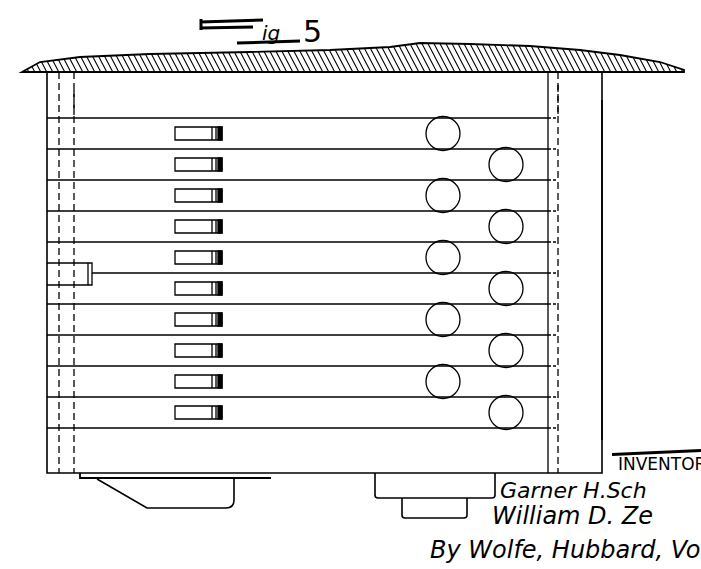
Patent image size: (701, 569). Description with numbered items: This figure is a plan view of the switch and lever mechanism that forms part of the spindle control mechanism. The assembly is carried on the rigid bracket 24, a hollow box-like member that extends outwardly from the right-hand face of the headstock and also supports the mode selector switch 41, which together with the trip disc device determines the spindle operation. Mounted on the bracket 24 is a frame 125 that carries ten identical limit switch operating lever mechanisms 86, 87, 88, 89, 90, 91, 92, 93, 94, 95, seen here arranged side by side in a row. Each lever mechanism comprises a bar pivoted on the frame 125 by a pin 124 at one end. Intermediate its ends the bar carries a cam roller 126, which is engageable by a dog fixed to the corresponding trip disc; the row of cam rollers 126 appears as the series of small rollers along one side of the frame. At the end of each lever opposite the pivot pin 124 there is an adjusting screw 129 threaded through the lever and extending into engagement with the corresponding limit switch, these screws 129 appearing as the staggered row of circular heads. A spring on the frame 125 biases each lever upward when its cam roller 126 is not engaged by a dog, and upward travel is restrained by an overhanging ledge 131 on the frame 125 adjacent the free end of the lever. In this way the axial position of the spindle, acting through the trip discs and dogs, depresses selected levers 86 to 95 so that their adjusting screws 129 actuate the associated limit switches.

The bracket 24 is at (643, 72).
The mode selector switch 41 is at (205, 506).
The limit switch operating lever mechanism 86 is at (313, 131).
The limit switch operating lever mechanism 87 is at (329, 161).
The limit switch operating lever mechanism 88 is at (340, 190).
The limit switch operating lever mechanism 89 is at (349, 221).
The limit switch operating lever mechanism 90 is at (357, 253).
The limit switch operating lever mechanism 91 is at (361, 284).
The limit switch operating lever mechanism 92 is at (288, 316).
The limit switch operating lever mechanism 93 is at (309, 349).
The limit switch operating lever mechanism 94 is at (337, 379).
The limit switch operating lever mechanism 95 is at (357, 410).
The pin 124 is at (76, 104).
The frame 125 is at (598, 227).
The cam roller 126 is at (179, 163).
The adjusting screw 129 is at (501, 153).
The overhanging ledge 131 is at (549, 103).